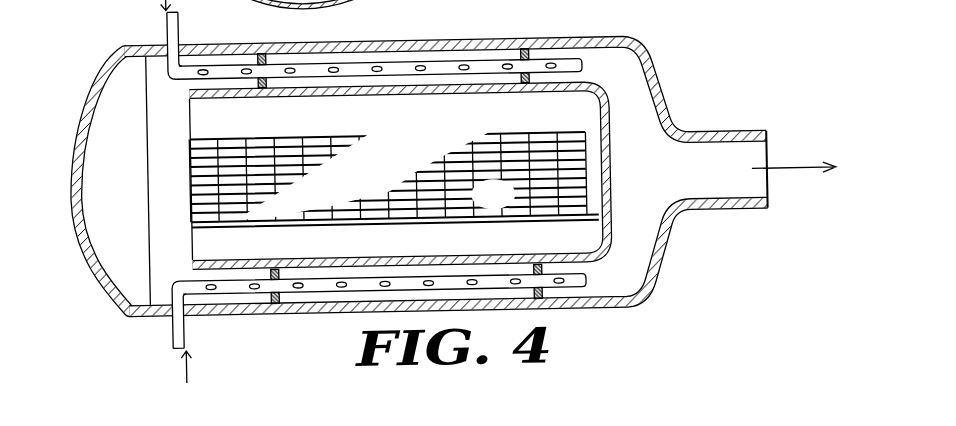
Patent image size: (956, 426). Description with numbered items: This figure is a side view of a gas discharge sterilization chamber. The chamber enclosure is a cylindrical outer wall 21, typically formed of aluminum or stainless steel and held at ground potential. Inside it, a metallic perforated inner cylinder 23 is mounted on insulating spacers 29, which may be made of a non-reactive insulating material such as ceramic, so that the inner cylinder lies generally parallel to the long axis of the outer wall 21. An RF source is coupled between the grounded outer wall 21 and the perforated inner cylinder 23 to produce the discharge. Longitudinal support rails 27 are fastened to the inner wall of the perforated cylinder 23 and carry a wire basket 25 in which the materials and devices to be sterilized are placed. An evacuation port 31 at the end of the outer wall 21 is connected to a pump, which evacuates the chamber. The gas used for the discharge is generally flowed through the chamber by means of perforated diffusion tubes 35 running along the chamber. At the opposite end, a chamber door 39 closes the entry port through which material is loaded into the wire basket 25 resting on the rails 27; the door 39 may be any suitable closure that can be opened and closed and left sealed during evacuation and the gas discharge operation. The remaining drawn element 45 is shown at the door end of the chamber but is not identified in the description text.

The outer housing shell 21 is at (579, 42).
The inner shell 23 is at (455, 257).
The catalyst core 25 is at (532, 206).
The support plate 27 is at (281, 226).
The spacer blocks 29 is at (526, 52).
The outlet 31 is at (767, 163).
The perforated inlet tube 35 is at (403, 63).
The end dome 39 is at (96, 84).
The inlet pipe 45 is at (169, 296).